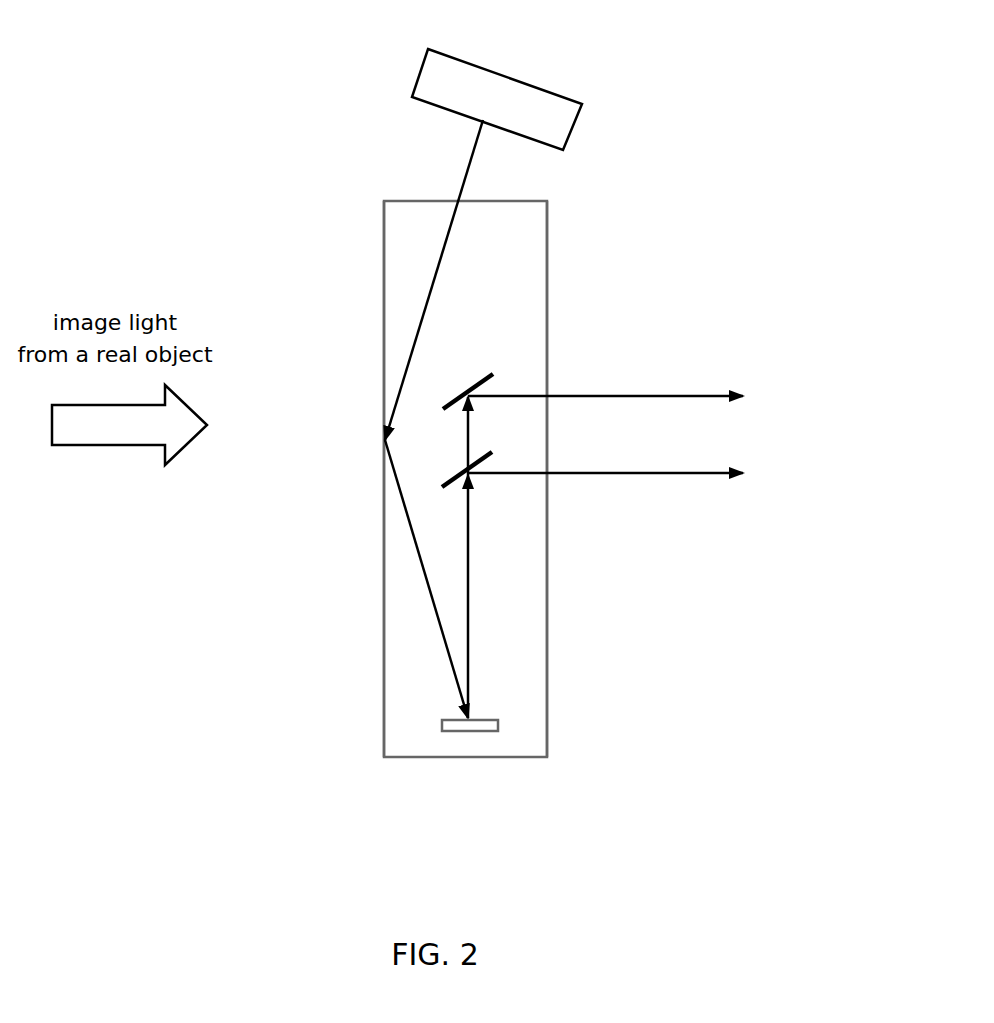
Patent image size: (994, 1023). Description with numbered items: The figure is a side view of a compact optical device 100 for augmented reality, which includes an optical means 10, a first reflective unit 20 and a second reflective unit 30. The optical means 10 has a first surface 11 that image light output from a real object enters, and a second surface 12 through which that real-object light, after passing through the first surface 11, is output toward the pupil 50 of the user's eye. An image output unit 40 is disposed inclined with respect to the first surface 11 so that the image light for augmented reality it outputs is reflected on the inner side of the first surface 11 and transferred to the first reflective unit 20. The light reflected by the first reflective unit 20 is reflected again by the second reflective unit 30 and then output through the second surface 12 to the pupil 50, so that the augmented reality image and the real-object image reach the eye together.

The optical means 10 is at (497, 757).
The first surface 11 is at (383, 235).
The second surface 12 is at (547, 638).
The first reflective unit 20 is at (442, 725).
The second reflective unit 30 is at (493, 378).
The image output unit 40 is at (510, 72).
The pupil 50 is at (661, 434).
The optical device for augmented reality 100 is at (694, 142).